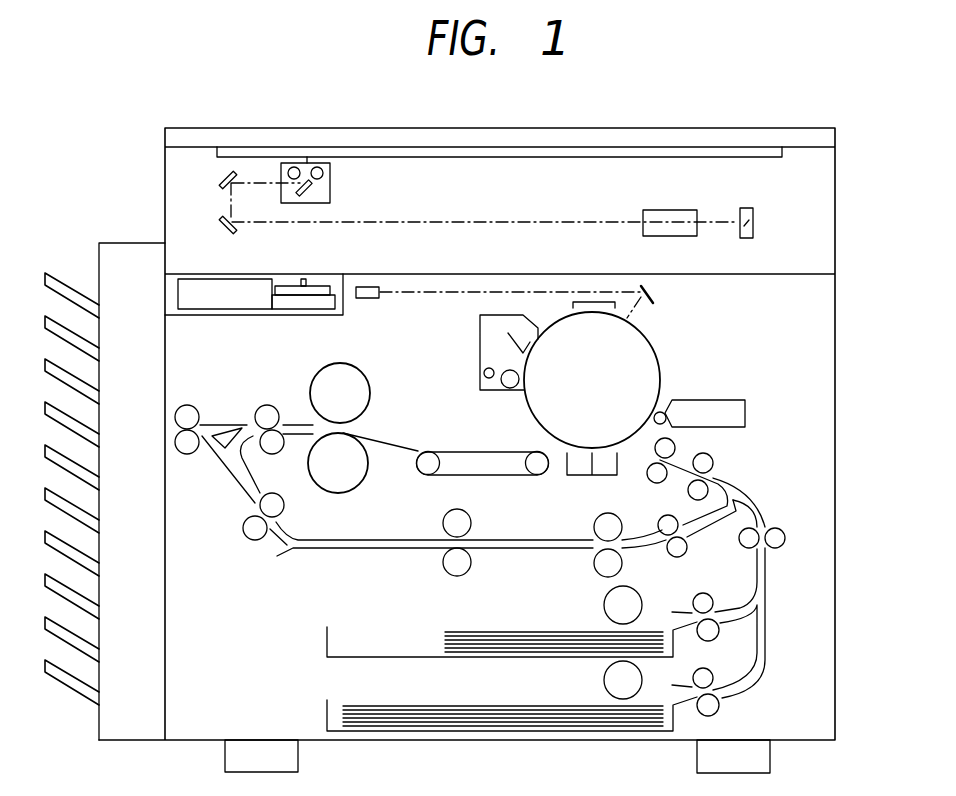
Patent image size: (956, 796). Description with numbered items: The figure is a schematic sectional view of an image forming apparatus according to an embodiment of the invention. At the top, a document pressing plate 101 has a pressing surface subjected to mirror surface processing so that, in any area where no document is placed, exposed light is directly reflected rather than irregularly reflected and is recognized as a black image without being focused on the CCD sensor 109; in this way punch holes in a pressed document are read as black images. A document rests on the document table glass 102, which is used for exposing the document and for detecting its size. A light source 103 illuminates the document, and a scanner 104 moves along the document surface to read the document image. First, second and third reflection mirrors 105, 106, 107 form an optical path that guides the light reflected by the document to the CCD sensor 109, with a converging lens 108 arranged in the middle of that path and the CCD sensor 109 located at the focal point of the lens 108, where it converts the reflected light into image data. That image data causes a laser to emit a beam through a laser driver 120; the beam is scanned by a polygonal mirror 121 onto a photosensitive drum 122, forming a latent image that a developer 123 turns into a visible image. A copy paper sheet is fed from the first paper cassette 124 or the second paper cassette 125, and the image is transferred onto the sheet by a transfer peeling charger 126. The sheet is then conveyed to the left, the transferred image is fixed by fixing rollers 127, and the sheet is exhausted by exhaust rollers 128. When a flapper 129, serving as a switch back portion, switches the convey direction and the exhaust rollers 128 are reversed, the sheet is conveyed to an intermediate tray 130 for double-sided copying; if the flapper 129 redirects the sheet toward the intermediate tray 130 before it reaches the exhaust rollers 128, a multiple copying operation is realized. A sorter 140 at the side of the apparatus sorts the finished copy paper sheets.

The document pressing plate 101 is at (837, 140).
The document table glass 102 is at (625, 152).
The light source 103 is at (322, 173).
The scanner 104 is at (310, 188).
The first reflection mirror 105 is at (336, 210).
The second reflection mirror 106 is at (225, 177).
The third reflection mirror 107 is at (225, 235).
The lens 108 is at (668, 210).
The CCD sensor 109 is at (745, 208).
The laser driver 120 is at (218, 300).
The polygonal mirror 121 is at (287, 282).
The photosensitive drum 122 is at (547, 337).
The developer 123 is at (745, 413).
The first paper cassette 124 is at (667, 652).
The second paper cassette 125 is at (668, 727).
The transfer peeling charger 126 is at (590, 477).
The fixing rollers 127 is at (387, 483).
The exhaust rollers 128 is at (173, 435).
The flapper 129 is at (213, 447).
The intermediate tray 130 is at (502, 552).
The sorter 140 is at (102, 723).